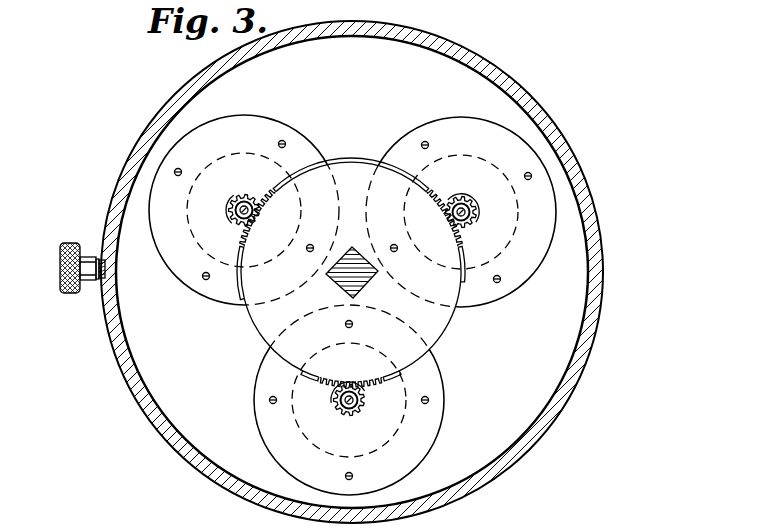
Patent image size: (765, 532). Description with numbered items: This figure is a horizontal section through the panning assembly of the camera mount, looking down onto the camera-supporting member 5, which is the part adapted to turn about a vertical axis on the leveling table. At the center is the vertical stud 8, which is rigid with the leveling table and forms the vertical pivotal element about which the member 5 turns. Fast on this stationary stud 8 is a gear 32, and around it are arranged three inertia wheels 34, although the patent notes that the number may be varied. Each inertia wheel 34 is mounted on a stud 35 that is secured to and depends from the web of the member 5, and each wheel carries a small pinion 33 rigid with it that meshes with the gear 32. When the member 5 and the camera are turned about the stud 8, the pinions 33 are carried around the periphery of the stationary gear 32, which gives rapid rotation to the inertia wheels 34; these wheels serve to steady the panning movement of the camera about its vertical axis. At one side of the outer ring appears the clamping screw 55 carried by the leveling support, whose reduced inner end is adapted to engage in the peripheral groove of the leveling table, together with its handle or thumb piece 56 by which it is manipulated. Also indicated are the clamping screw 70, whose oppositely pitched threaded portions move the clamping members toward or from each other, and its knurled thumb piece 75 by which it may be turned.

The camera-supporting member 5 is at (587, 332).
The vertical stud 8 is at (338, 283).
The gear 32 is at (241, 277).
The pinion 33 is at (239, 225).
The inertia wheel 34 is at (264, 117).
The stud 35 is at (245, 195).
The clamping screw 55 is at (99, 283).
The handle or thumb piece 56 is at (84, 290).
The clamping screw 70 is at (100, 262).
The knurled thumb piece 75 is at (64, 246).